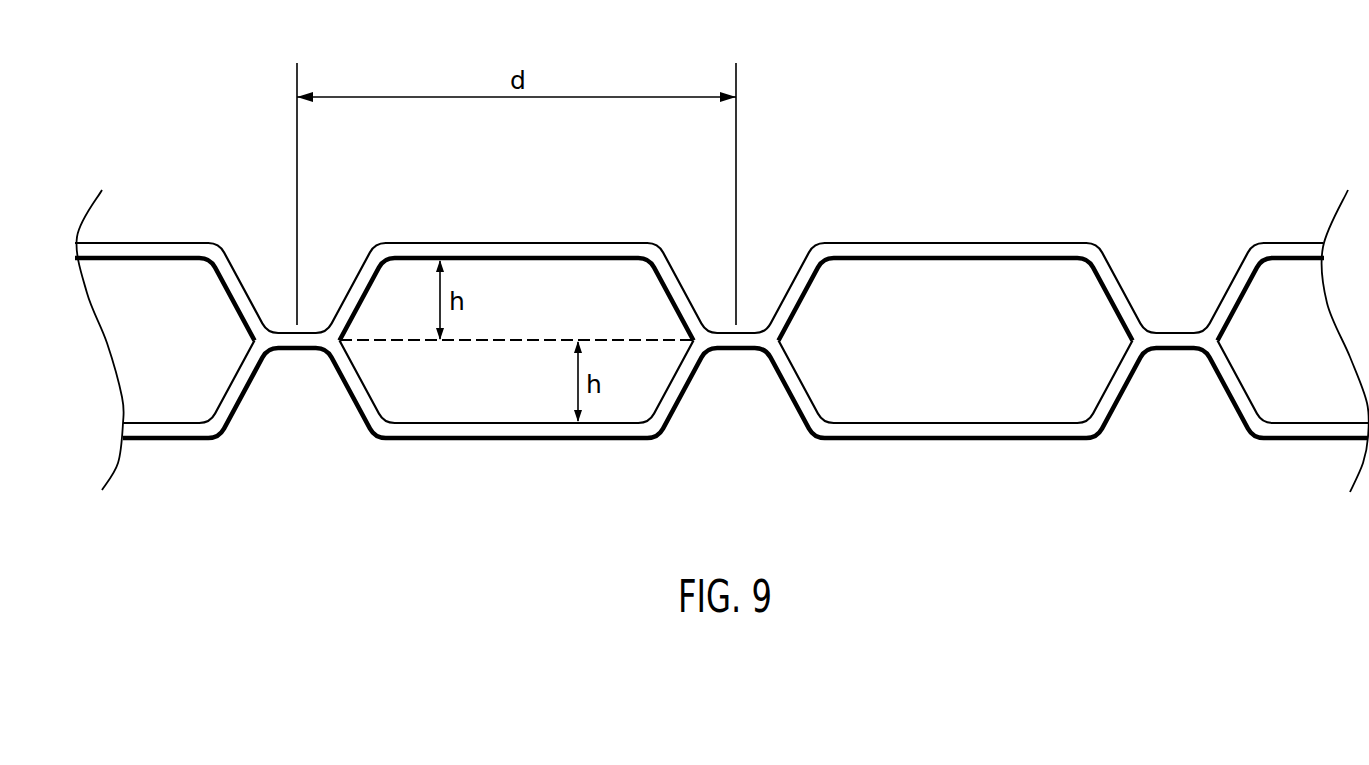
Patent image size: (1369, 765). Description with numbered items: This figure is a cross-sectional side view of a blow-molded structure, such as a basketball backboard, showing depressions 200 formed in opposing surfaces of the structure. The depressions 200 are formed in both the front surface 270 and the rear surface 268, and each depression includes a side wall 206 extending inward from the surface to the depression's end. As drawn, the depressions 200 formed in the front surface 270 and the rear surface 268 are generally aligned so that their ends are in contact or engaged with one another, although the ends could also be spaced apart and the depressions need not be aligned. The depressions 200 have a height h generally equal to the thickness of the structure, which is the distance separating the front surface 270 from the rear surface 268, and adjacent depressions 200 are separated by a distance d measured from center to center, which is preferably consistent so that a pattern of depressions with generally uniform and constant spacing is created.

The depression 200 is at (240, 282).
The side wall 206 is at (353, 283).
The rear surface 268 is at (957, 248).
The front surface 270 is at (942, 433).